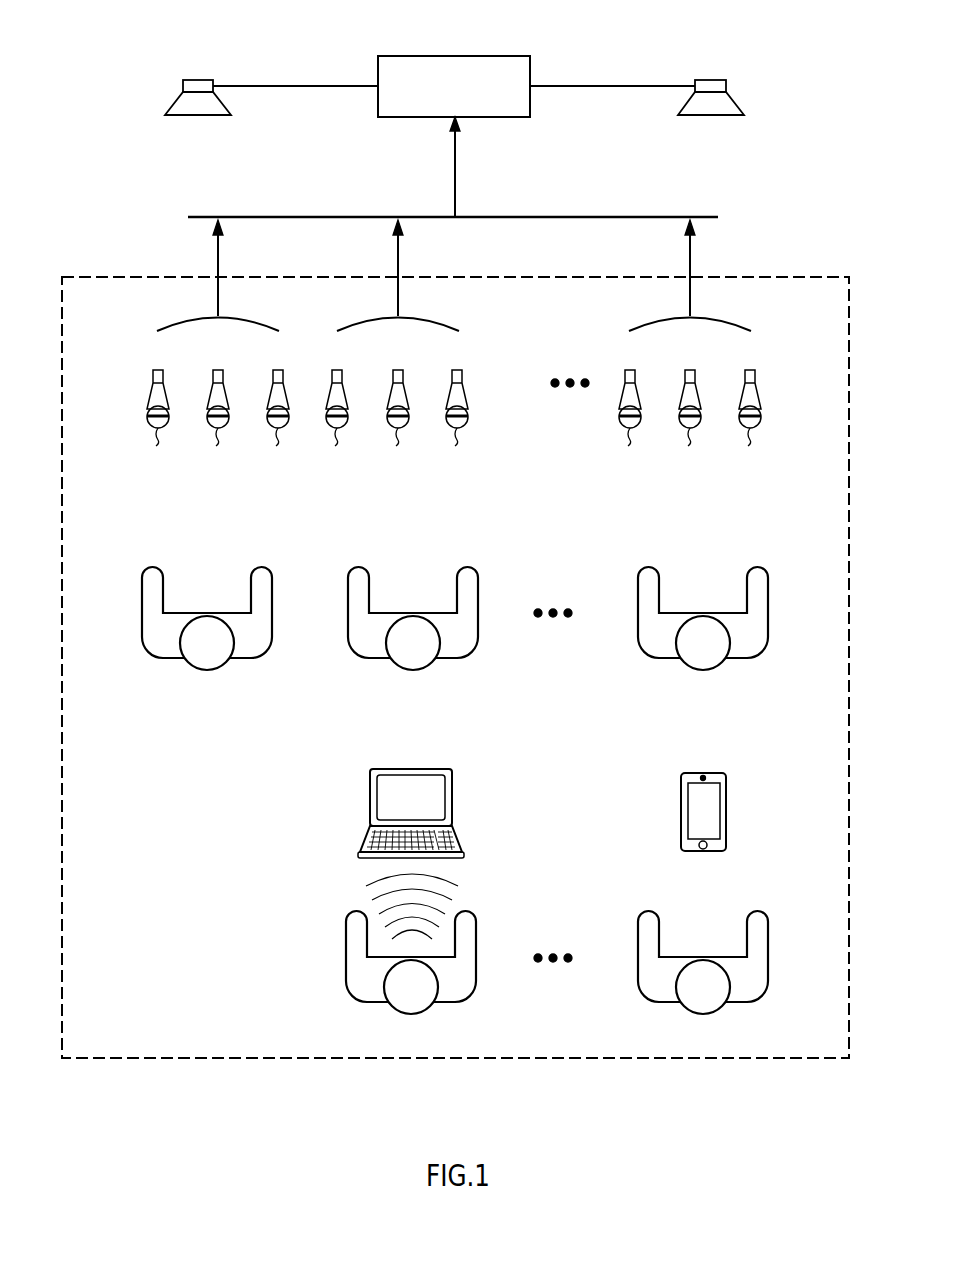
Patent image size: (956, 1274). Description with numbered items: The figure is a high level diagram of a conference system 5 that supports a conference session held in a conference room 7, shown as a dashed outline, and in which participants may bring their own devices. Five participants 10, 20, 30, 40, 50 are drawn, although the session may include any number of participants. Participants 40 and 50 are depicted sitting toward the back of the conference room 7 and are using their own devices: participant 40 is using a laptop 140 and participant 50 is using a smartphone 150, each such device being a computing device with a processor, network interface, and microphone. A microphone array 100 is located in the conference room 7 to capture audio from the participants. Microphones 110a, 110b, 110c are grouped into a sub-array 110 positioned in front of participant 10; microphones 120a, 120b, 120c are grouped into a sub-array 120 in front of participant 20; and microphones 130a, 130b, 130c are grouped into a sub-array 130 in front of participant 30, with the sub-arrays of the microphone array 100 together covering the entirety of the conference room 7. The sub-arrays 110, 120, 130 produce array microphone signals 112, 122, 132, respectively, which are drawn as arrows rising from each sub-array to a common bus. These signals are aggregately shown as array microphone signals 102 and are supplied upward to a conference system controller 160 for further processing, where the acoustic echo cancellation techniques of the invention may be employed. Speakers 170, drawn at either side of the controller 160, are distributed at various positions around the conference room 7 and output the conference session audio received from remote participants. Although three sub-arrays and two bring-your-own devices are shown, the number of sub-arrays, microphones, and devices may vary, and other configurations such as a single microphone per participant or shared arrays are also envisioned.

The conference system 5 is at (802, 244).
The conference room 7 is at (118, 276).
The participant 10 is at (207, 670).
The participant 20 is at (413, 670).
The participant 30 is at (703, 670).
The participant 40 is at (411, 1015).
The participant 50 is at (703, 1015).
The microphone array 100 is at (452, 423).
The array microphone signals (aggregate) 102 is at (455, 187).
The sub-array 110 is at (188, 389).
The microphone 110a is at (160, 419).
The microphone 110b is at (220, 419).
The microphone 110c is at (280, 419).
The array microphone signal 112 is at (218, 258).
The sub-array 120 is at (428, 389).
The microphone 120a is at (339, 419).
The microphone 120b is at (400, 419).
The microphone 120c is at (459, 419).
The array microphone signal 122 is at (398, 258).
The sub-array 130 is at (720, 389).
The microphone 130a is at (632, 419).
The microphone 130b is at (692, 419).
The microphone 130c is at (752, 419).
The array microphone signal 132 is at (690, 258).
The laptop 140 is at (368, 798).
The smartphone 150 is at (727, 810).
The conference system controller 160 is at (430, 56).
The speakers 170 is at (196, 80).